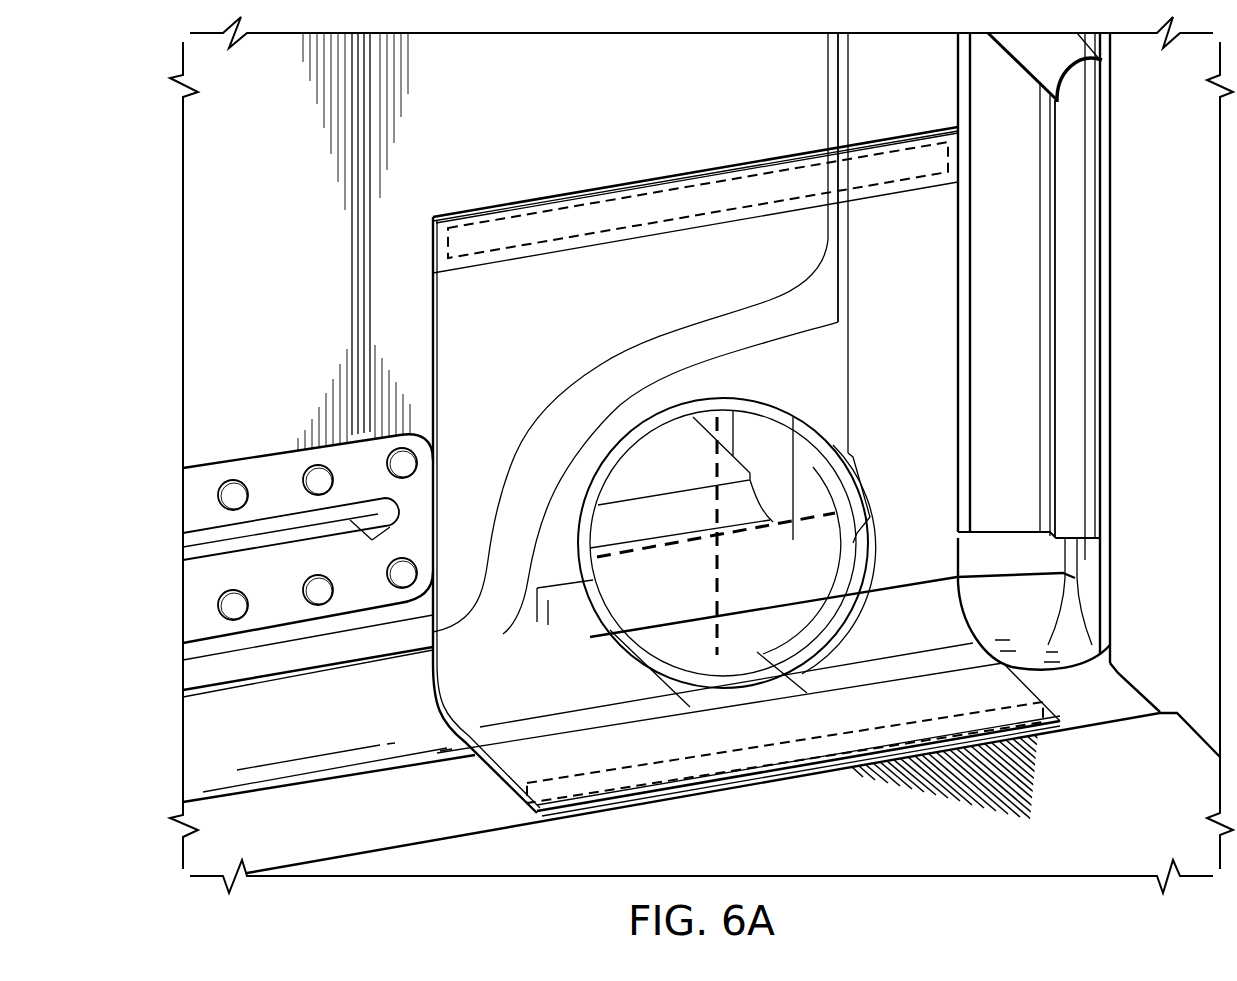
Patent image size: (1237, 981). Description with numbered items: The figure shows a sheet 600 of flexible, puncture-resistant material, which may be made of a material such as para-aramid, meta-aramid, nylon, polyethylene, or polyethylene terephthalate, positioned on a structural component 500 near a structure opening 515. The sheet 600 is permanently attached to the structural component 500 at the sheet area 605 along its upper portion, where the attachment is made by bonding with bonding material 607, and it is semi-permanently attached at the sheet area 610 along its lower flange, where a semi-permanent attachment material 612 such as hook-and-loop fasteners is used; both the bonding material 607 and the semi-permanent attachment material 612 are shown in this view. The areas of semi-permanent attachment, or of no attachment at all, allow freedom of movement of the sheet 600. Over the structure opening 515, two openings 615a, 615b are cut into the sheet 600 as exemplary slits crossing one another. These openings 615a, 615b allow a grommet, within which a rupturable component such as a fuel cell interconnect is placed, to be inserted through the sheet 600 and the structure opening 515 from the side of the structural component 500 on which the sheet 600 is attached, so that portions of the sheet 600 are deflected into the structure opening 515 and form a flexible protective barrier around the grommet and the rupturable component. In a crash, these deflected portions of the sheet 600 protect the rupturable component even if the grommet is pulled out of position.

The structural component 500 is at (466, 138).
The sheet 600 is at (515, 381).
The sheet area 605 is at (598, 214).
The bonding material 607 is at (910, 150).
The structure opening 515 is at (777, 420).
The opening 615a is at (715, 560).
The opening 615b is at (744, 534).
The semi-permanent attachment material 612 is at (622, 768).
The sheet area 610 is at (663, 773).